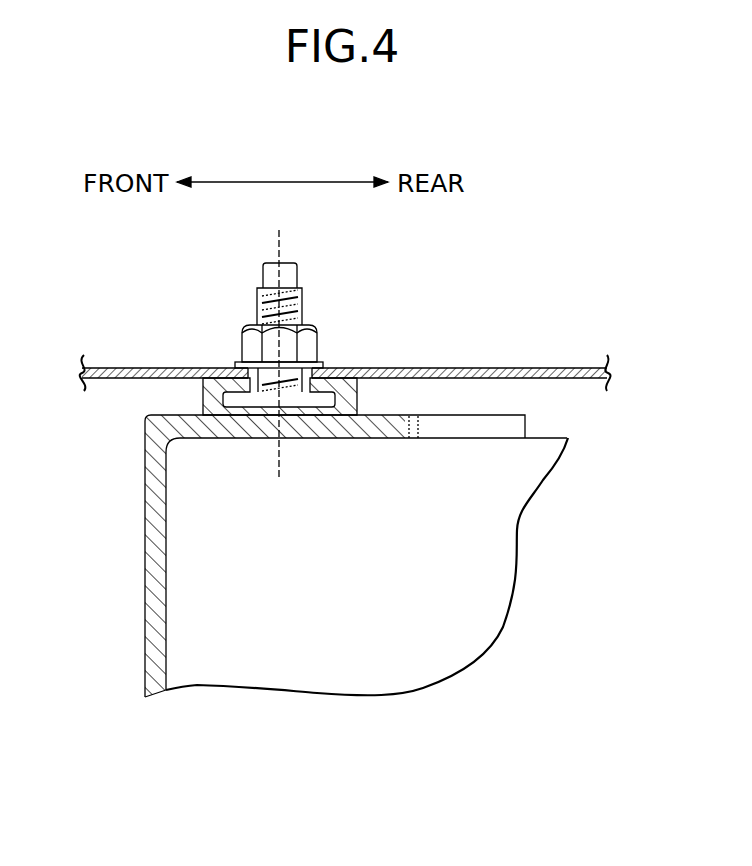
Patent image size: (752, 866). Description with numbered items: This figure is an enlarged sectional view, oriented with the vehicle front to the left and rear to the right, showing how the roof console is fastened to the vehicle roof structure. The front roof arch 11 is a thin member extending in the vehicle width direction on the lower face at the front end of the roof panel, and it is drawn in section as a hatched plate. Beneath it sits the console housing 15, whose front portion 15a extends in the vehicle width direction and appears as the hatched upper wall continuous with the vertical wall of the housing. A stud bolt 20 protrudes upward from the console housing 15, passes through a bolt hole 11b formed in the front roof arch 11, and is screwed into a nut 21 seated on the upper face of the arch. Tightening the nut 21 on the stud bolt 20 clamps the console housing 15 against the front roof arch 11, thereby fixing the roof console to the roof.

The front roof arch 11 is at (547, 367).
The bolt hole 11b is at (265, 367).
The console housing 15 is at (145, 585).
The front portion 15a is at (145, 435).
The stud bolt 20 is at (300, 293).
The nut 21 is at (313, 350).